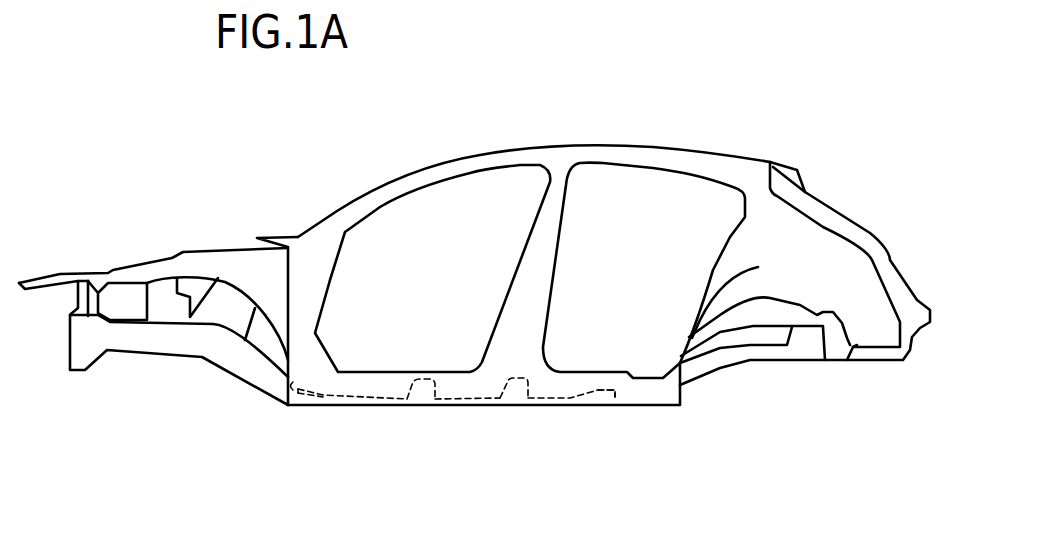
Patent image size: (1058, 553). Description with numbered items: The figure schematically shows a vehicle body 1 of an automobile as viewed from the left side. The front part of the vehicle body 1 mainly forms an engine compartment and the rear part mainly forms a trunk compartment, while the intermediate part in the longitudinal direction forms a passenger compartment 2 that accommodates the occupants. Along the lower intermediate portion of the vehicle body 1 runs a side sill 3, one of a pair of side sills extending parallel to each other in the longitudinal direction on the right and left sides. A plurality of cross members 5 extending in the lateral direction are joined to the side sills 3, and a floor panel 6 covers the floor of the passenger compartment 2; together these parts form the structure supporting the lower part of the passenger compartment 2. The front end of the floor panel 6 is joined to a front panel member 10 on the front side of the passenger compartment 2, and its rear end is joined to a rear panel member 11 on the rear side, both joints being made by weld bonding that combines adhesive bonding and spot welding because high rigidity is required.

The vehicle body 1 is at (299, 182).
The passenger compartment 2 is at (640, 266).
The side sill 3 is at (650, 398).
The cross member 5 is at (425, 380).
The floor panel 6 is at (367, 400).
The front panel member 10 is at (300, 395).
The rear panel member 11 is at (602, 390).